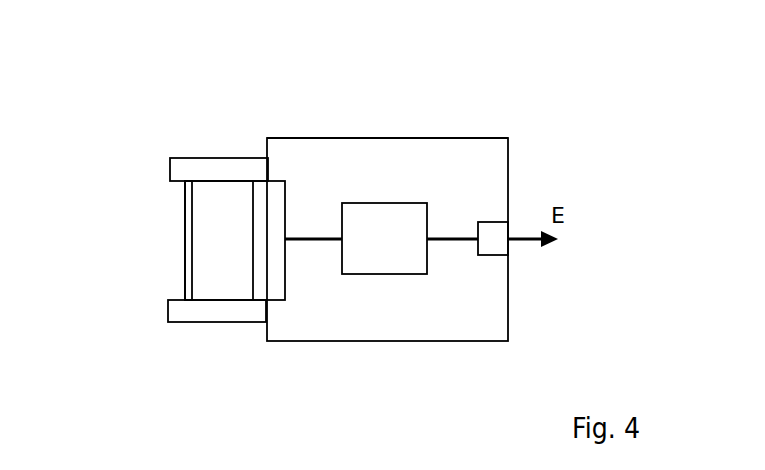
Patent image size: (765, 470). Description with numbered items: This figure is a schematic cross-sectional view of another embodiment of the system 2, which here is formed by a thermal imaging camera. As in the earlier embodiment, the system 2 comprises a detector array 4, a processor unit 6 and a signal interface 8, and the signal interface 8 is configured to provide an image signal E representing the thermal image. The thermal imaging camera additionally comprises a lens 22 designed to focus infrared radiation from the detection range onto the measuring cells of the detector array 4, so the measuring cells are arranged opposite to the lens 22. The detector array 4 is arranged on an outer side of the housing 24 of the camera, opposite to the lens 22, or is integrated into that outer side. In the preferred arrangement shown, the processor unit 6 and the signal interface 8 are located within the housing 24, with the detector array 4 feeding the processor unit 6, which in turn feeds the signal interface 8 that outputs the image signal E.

The system 2 is at (406, 108).
The detector array 4 is at (298, 188).
The processor unit 6 is at (384, 238).
The signal interface 8 is at (493, 238).
The lens 22 is at (176, 274).
The housing 24 is at (300, 131).